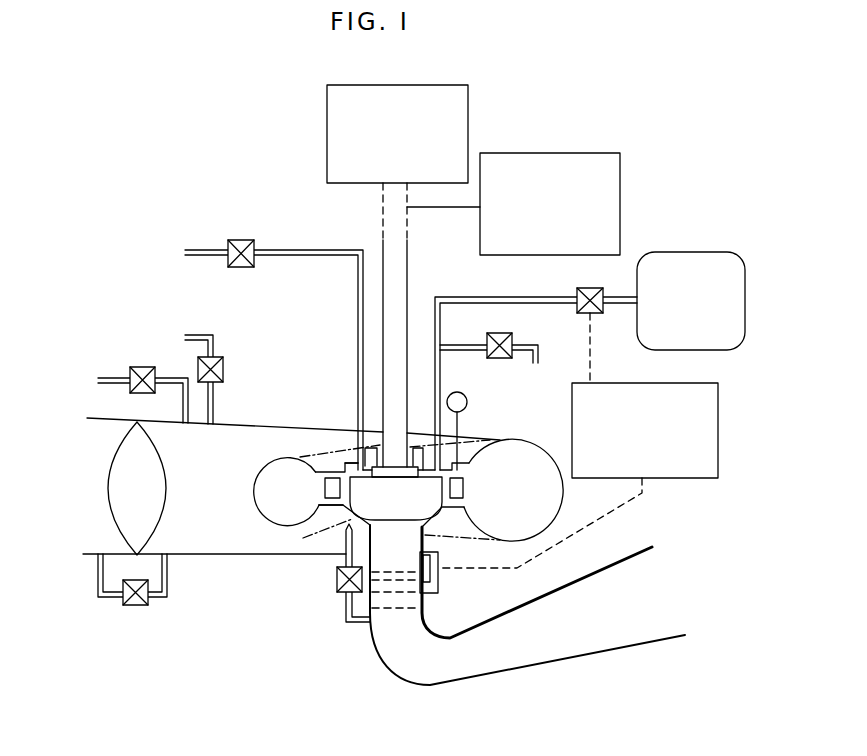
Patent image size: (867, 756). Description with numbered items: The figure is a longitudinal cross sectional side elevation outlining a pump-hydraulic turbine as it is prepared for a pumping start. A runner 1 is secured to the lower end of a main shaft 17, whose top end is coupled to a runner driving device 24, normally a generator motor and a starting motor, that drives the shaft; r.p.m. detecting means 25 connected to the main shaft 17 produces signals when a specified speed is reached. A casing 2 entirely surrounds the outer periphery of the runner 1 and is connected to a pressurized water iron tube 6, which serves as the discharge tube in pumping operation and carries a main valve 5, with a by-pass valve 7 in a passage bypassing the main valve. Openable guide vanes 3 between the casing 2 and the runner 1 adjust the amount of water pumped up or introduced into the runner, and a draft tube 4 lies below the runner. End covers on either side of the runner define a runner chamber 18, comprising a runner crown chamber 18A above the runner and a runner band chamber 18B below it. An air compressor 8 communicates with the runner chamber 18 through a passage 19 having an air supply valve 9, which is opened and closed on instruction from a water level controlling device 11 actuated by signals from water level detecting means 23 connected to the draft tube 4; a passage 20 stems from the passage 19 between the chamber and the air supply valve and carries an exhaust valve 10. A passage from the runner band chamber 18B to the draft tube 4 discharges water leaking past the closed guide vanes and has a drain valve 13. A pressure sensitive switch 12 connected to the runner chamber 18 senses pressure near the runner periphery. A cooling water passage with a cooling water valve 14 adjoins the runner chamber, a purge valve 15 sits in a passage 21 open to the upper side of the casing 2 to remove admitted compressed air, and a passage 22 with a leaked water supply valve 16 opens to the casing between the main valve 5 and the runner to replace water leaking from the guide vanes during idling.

The runner 1 is at (403, 517).
The casing 2 is at (562, 468).
The guide vanes 3 is at (463, 488).
The draft tube 4 is at (527, 605).
The main valve 5 is at (137, 488).
The pressurized water iron tube 6 is at (85, 421).
The by-pass valve 7 is at (148, 600).
The air compressor 8 is at (690, 252).
The air supply valve 9 is at (598, 275).
The exhaust valve 10 is at (492, 318).
The water level controlling device 11 is at (680, 478).
The pressure sensitive switch 12 is at (467, 402).
The drain valve 13 is at (337, 579).
The cooling water valve 14 is at (241, 240).
The purge valve 15 is at (223, 369).
The leaked water supply valve 16 is at (143, 367).
The main shaft 17 is at (407, 248).
The runner chamber 18 is at (396, 571).
The runner crown chamber 18A is at (365, 465).
The runner band chamber 18B is at (348, 508).
The passage 19 is at (540, 297).
The passage 20 is at (532, 344).
The passage 21 is at (210, 334).
The passage 22 is at (113, 378).
The water level detecting means 23 is at (438, 572).
The runner driving device 24 is at (468, 99).
The r.p.m. detecting means 25 is at (606, 153).